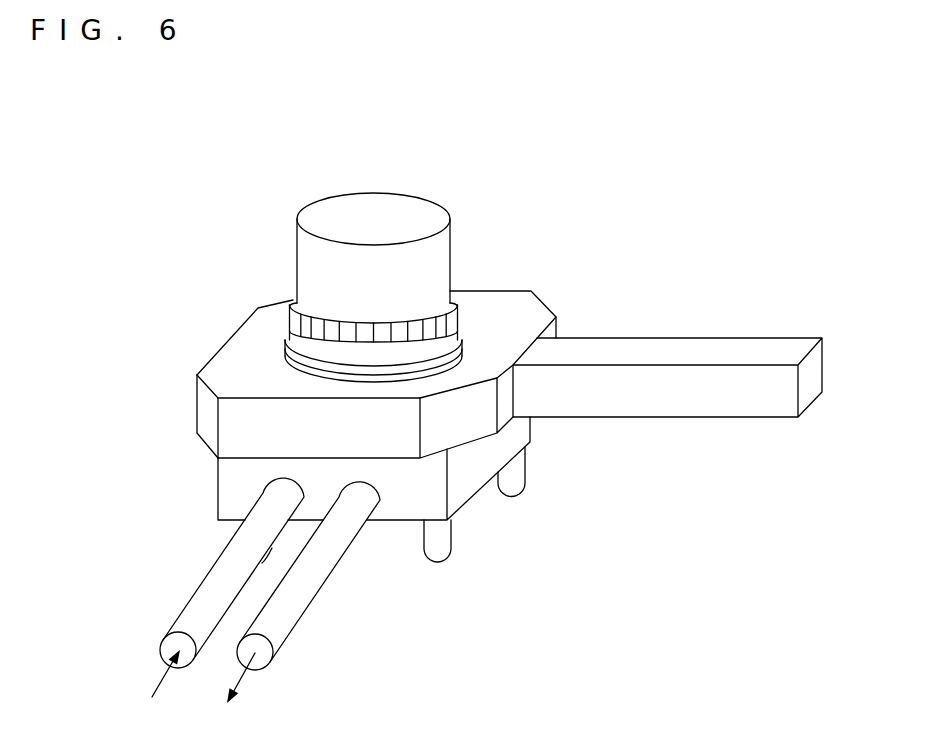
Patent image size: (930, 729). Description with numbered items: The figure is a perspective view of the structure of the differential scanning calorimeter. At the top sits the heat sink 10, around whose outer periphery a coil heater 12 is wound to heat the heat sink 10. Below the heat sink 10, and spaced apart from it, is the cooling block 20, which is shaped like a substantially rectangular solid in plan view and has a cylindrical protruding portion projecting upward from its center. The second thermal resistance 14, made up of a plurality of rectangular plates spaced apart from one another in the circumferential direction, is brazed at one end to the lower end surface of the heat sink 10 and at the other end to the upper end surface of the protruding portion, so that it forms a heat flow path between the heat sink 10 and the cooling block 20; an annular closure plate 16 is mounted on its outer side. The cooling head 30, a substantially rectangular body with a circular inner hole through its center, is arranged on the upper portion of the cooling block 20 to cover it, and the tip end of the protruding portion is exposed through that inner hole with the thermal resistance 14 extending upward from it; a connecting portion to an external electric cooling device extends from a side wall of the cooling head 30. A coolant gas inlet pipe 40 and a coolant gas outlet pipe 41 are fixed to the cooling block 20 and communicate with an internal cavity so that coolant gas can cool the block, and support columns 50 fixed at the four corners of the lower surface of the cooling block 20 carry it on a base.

The heat sink 10 is at (430, 247).
The coil heater 12 is at (447, 262).
The second thermal resistance 14 is at (433, 312).
The annular closure plate 16 is at (288, 334).
The cooling block 20 is at (232, 488).
The cooling head 30 is at (222, 360).
The coolant gas inlet pipe 40 is at (207, 570).
The coolant gas outlet pipe 41 is at (302, 604).
The support columns 50 is at (442, 545).